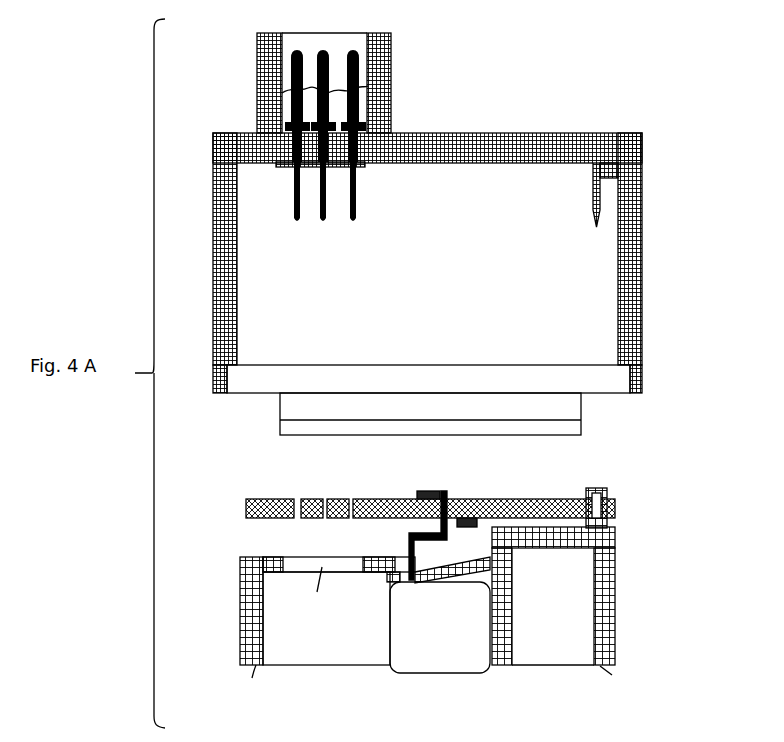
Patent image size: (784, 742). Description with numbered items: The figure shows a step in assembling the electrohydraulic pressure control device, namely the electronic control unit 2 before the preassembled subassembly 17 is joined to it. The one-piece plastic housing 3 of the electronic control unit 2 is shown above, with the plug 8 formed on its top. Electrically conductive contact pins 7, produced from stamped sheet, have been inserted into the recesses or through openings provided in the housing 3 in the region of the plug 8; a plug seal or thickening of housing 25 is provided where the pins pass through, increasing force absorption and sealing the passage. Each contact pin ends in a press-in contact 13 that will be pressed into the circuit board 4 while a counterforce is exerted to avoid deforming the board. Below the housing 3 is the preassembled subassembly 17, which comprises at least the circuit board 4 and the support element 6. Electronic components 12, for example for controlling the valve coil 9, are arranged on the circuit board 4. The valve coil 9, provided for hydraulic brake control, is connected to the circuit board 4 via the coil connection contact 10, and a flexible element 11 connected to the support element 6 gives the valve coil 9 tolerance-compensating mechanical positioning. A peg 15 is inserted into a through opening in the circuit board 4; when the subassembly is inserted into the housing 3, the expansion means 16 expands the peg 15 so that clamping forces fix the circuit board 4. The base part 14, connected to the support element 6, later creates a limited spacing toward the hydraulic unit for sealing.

The electronic control unit 2 is at (673, 178).
The housing 3 is at (641, 272).
The circuit board 4 is at (270, 499).
The support element 6 is at (612, 628).
The contact pins 7 is at (282, 93).
The plug 8 is at (390, 98).
The valve coil 9 is at (460, 664).
The connection contact 10 is at (409, 542).
The flexible element 11 is at (433, 574).
The electronic components 12 is at (428, 491).
The press-in contacts 13 is at (297, 223).
The base part 14 is at (436, 681).
The peg 15 is at (606, 496).
The expansion means 16 is at (596, 213).
The preassembled subassembly 17 is at (648, 568).
The plug seal or thickening of housing 25 is at (363, 167).